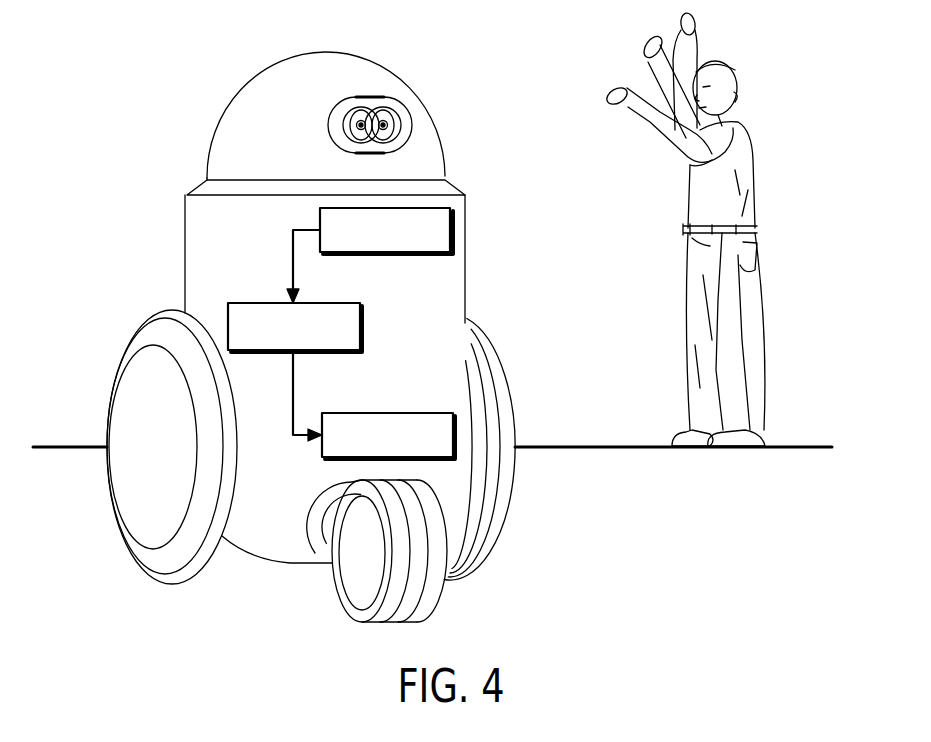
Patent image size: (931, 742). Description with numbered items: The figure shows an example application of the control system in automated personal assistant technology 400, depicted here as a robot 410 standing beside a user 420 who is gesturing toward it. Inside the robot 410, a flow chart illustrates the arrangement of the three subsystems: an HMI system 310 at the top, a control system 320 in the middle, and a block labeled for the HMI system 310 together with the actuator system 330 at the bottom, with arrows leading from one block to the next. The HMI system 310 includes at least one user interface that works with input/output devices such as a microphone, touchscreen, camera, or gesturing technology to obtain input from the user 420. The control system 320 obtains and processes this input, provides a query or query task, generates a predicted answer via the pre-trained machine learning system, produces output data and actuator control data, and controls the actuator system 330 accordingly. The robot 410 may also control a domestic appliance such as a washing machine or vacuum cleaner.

The automated personal assistant technology 400 is at (337, 311).
The robot 410 is at (258, 68).
The user 420 is at (762, 178).
The HMI system 310 is at (386, 231).
The control system 320 is at (295, 327).
The actuator system 330 is at (388, 436).